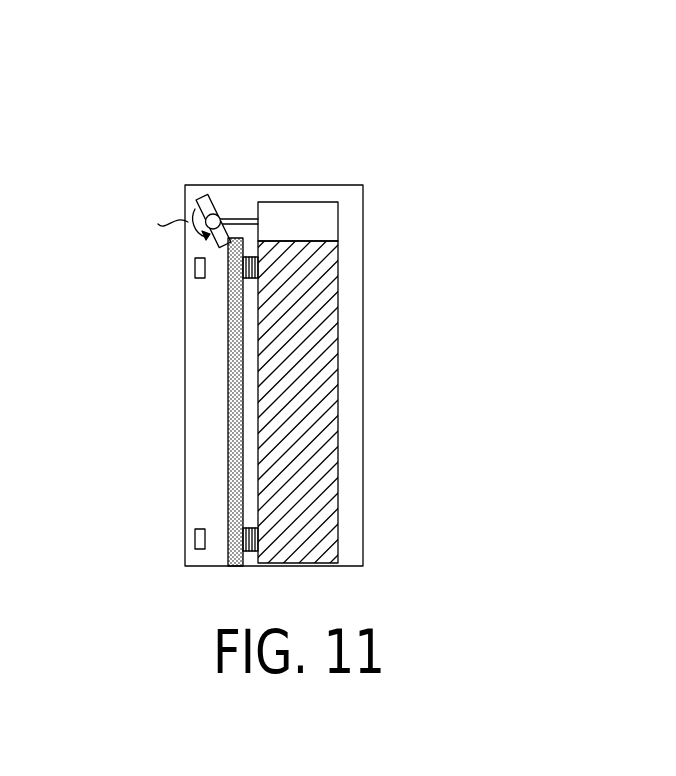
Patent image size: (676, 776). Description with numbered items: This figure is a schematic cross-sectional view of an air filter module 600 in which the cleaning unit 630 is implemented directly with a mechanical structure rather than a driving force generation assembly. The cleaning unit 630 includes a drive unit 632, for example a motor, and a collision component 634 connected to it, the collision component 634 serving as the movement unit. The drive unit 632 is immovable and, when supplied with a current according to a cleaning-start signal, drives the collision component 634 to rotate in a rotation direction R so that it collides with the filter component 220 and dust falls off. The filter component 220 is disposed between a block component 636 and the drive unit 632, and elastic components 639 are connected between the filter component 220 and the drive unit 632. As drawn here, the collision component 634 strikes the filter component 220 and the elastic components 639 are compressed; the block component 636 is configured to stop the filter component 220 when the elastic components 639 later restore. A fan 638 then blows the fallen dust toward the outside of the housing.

The air filter module 600 is at (538, 609).
The cleaning unit 630 is at (407, 98).
The drive unit 632 is at (297, 210).
The collision component 634 is at (203, 205).
The block component 636 is at (197, 268).
The fan 638 is at (330, 263).
The elastic component 639 is at (250, 257).
The filter component 220 is at (233, 396).